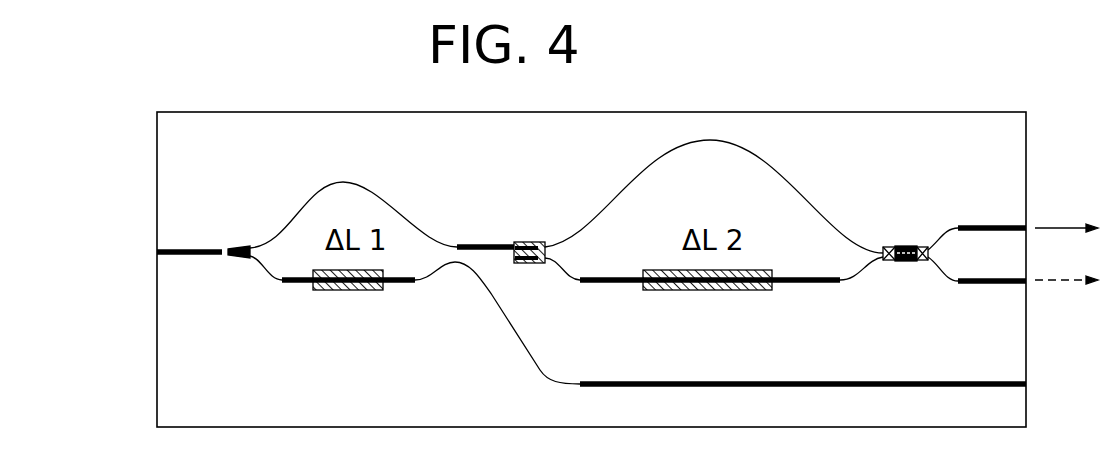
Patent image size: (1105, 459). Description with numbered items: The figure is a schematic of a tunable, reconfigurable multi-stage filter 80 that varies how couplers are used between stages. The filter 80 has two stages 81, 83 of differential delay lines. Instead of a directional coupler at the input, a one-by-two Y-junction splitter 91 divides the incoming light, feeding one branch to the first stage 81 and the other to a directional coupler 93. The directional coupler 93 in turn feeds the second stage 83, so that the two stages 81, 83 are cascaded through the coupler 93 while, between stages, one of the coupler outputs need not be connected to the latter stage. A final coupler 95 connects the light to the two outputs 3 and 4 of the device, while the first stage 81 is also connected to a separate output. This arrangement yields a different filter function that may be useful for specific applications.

The tunable/reconfigurable filter 80 is at (669, 98).
The Y-junction splitter 91 is at (247, 248).
The directional coupler 93 is at (533, 242).
The coupler 95 is at (920, 247).
The first stage 81 is at (367, 291).
The second stage 83 is at (748, 291).
The output 3 is at (1013, 225).
The output 4 is at (1013, 288).